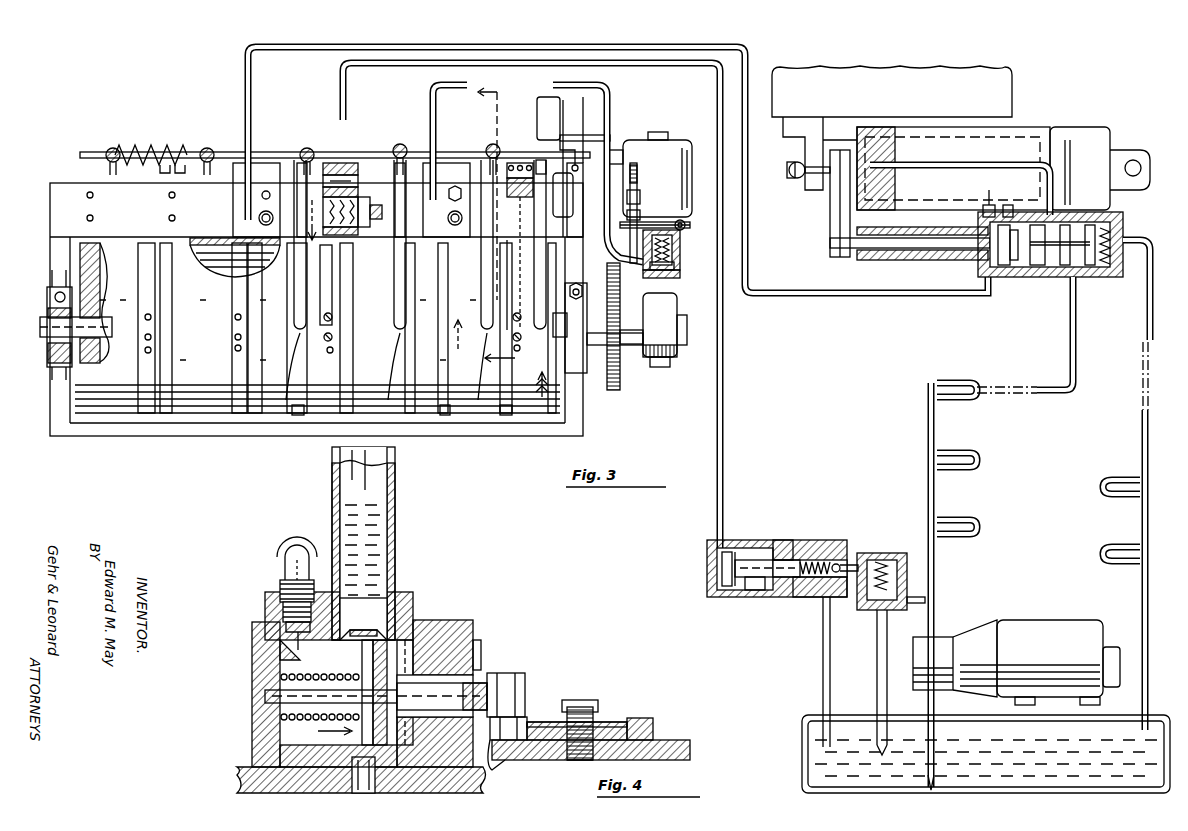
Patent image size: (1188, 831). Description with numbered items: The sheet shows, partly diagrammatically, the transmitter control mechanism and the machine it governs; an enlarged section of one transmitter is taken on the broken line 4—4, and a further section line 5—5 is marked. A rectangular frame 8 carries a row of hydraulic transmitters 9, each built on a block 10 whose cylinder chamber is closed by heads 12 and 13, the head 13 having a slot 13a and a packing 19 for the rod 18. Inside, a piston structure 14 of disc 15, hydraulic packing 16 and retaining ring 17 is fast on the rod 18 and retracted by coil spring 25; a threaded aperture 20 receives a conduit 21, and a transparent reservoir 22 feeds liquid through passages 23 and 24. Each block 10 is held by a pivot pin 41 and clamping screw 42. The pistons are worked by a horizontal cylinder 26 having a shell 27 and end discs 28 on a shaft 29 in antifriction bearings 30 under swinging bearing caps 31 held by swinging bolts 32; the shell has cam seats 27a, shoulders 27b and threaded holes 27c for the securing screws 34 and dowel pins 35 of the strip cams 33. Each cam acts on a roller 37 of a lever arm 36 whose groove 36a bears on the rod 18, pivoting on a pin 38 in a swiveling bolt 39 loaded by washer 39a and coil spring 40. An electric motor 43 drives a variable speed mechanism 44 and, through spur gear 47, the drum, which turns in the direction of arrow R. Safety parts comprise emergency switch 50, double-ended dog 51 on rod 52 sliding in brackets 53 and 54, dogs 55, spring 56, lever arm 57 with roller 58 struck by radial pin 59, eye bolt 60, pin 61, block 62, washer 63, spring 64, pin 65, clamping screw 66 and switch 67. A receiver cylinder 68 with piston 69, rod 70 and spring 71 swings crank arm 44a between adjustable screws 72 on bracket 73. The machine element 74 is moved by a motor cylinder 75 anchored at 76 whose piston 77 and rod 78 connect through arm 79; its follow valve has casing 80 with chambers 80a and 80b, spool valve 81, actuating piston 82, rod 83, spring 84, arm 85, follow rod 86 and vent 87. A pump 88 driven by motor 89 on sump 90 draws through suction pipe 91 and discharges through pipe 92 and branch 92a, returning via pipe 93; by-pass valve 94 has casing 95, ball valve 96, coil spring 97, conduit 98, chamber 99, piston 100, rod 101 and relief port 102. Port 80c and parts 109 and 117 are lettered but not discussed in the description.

In FIG. 3, the section line 4— 4 is at (385, 276).
In FIG. 3, the section line 5- 5 is at (496, 230).
In FIG. 3, the rectangular frame 8 is at (50, 192).
In FIG. 3, the hydraulic transmitters 9 is at (228, 195).
In FIG. 4, the hydraulic transmitters 9 is at (242, 716).
In FIG. 3, the block 10 is at (325, 160).
In FIG. 4, the block 10 is at (265, 600).
In FIG. 4, the head 12 is at (252, 640).
In FIG. 4, the head 13 is at (455, 620).
In FIG. 4, the slot 13a is at (478, 645).
In FIG. 4, the piston structure 14 is at (326, 735).
In FIG. 4, the disc 15 is at (412, 733).
In FIG. 4, the hydraulic packing 16 is at (362, 655).
In FIG. 4, the retaining ring 17 is at (370, 735).
In FIG. 4, the rod 18 is at (450, 672).
In FIG. 4, the hydraulic packing 19 is at (403, 648).
In FIG. 4, the threaded aperture 20 is at (278, 652).
In FIG. 3, the conduit 21 is at (244, 70).
In FIG. 4, the conduit 21 is at (294, 552).
In FIG. 3, the tubular reservoir 22 is at (258, 222).
In FIG. 4, the tubular reservoir 22 is at (395, 508).
In FIG. 4, the passage 23 is at (348, 630).
In FIG. 4, the passage 24 is at (370, 632).
In FIG. 4, the coil spring 25 is at (300, 720).
In FIG. 3, the horizontal cylinder 26 is at (210, 392).
In FIG. 3, the cylindrical shell 27 is at (190, 413).
In FIG. 4, the cylindrical shell 27 is at (680, 740).
In FIG. 3, the cam seats 27a is at (148, 413).
In FIG. 4, the cam seats 27a is at (600, 722).
In FIG. 3, the shoulder 27b is at (165, 413).
In FIG. 4, the shoulder 27b is at (635, 718).
In FIG. 3, the threaded holes 27c is at (235, 316).
In FIG. 4, the threaded holes 27c is at (580, 760).
In FIG. 3, the end discs 28 is at (100, 296).
In FIG. 3, the supporting shaft 29 is at (104, 342).
In FIG. 3, the antifriction bearings 30 is at (47, 300).
In FIG. 3, the swinging bearing caps 31 is at (52, 372).
In FIG. 3, the swinging bolts 32 is at (50, 290).
In FIG. 3, the cams 33 is at (297, 413).
In FIG. 4, the cams 33 is at (620, 720).
In FIG. 3, the securing screws 34 is at (328, 314).
In FIG. 4, the securing screws 34 is at (580, 700).
In FIG. 3, the dowel pin 35 is at (152, 352).
In FIG. 3, the lever arm 36 is at (376, 230).
In FIG. 4, the lever arm 36 is at (525, 685).
In FIG. 4, the angular groove 36a is at (492, 690).
In FIG. 3, the roller 37 is at (398, 325).
In FIG. 4, the roller 37 is at (503, 760).
In FIG. 3, the pin 38 is at (400, 144).
In FIG. 3, the bolt 39 is at (355, 178).
In FIG. 3, the washer 39a is at (330, 165).
In FIG. 3, the coil spring 40 is at (352, 170).
In FIG. 4, the pivot pin 41 is at (352, 785).
In FIG. 3, the clamping screw 42 is at (266, 190).
In FIG. 3, the electric motor 43 is at (686, 142).
In FIG. 3, the variable speed mechanism 44 is at (684, 222).
In FIG. 3, the crank arm 44a is at (660, 222).
In FIG. 3, the spur gear 47 is at (620, 375).
In FIG. 3, the emergency switch 50 is at (548, 98).
In FIG. 3, the double-ended dog 51 is at (590, 138).
In FIG. 3, the rod 52 is at (82, 152).
In FIG. 3, the bracket 53 is at (584, 101).
In FIG. 3, the bracket 54 is at (190, 150).
In FIG. 3, the dogs 55 is at (112, 148).
In FIG. 3, the coil spring 56 is at (138, 152).
In FIG. 3, the lever arm 57 is at (540, 284).
In FIG. 3, the antifriction roller 58 is at (520, 335).
In FIG. 3, the radial pin 59 is at (541, 372).
In FIG. 3, the eye bolt 60 is at (511, 165).
In FIG. 3, the pin 61 is at (560, 150).
In FIG. 3, the block 62 is at (520, 165).
In FIG. 3, the washer 63 is at (527, 165).
In FIG. 3, the spring 64 is at (537, 162).
In FIG. 3, the pin 65 is at (518, 240).
In FIG. 3, the clamping screw 66 is at (570, 205).
In FIG. 3, the motor control switch 67 is at (598, 173).
In FIG. 3, the cylinder 68 is at (680, 278).
In FIG. 3, the piston 69 is at (678, 268).
In FIG. 3, the rod 70 is at (680, 238).
In FIG. 3, the retracting spring 71 is at (680, 255).
In FIG. 3, the adjustable screws 72 is at (645, 160).
In FIG. 3, the bracket 73 is at (640, 195).
In FIG. 3, the machine element 74 is at (945, 67).
In FIG. 3, the cylinder 75 is at (950, 127).
In FIG. 3, the anchor 76 is at (1135, 158).
In FIG. 3, the piston 77 is at (957, 176).
In FIG. 3, the rod 78 is at (810, 192).
In FIG. 3, the arm 79 is at (805, 147).
In FIG. 3, the casing 80 is at (1036, 272).
In FIG. 3, the chamber 80a is at (1142, 300).
In FIG. 3, the chamber 80b is at (985, 212).
In FIG. 3, the port 80c is at (1008, 212).
In FIG. 3, the spool valve 81 is at (1090, 272).
In FIG. 3, the actuating piston 82 is at (1000, 272).
In FIG. 3, the rod 83 is at (1065, 272).
In FIG. 3, the spring 84 is at (1120, 235).
In FIG. 3, the arm 85 is at (830, 242).
In FIG. 3, the follow rod 86 is at (908, 250).
In FIG. 3, the vent 87 is at (1014, 272).
In FIG. 3, the pump 88 is at (945, 638).
In FIG. 3, the motor 89 is at (1073, 620).
In FIG. 3, the sump chamber 90 is at (802, 725).
In FIG. 3, the suction pipe 91 is at (925, 700).
In FIG. 3, the discharge pipe 92 is at (936, 574).
In FIG. 3, the branch 92a is at (1075, 372).
In FIG. 3, the return pipe 93 is at (1140, 446).
In FIG. 3, the by-pass valve 94 is at (880, 553).
In FIG. 3, the casing 95 is at (773, 540).
In FIG. 3, the ball valve 96 is at (834, 562).
In FIG. 3, the coil spring 97 is at (815, 540).
In FIG. 3, the conduit 98 is at (823, 640).
In FIG. 3, the chamber 99 is at (707, 568).
In FIG. 3, the hydraulic piston 100 is at (722, 585).
In FIG. 3, the rod 101 is at (752, 590).
In FIG. 3, the relief port 102 is at (768, 590).
In FIG. 3, the foot 109 is at (298, 415).
In FIG. 4, the fitting 117 is at (300, 632).
In FIG. 3, the arrow R is at (525, 413).